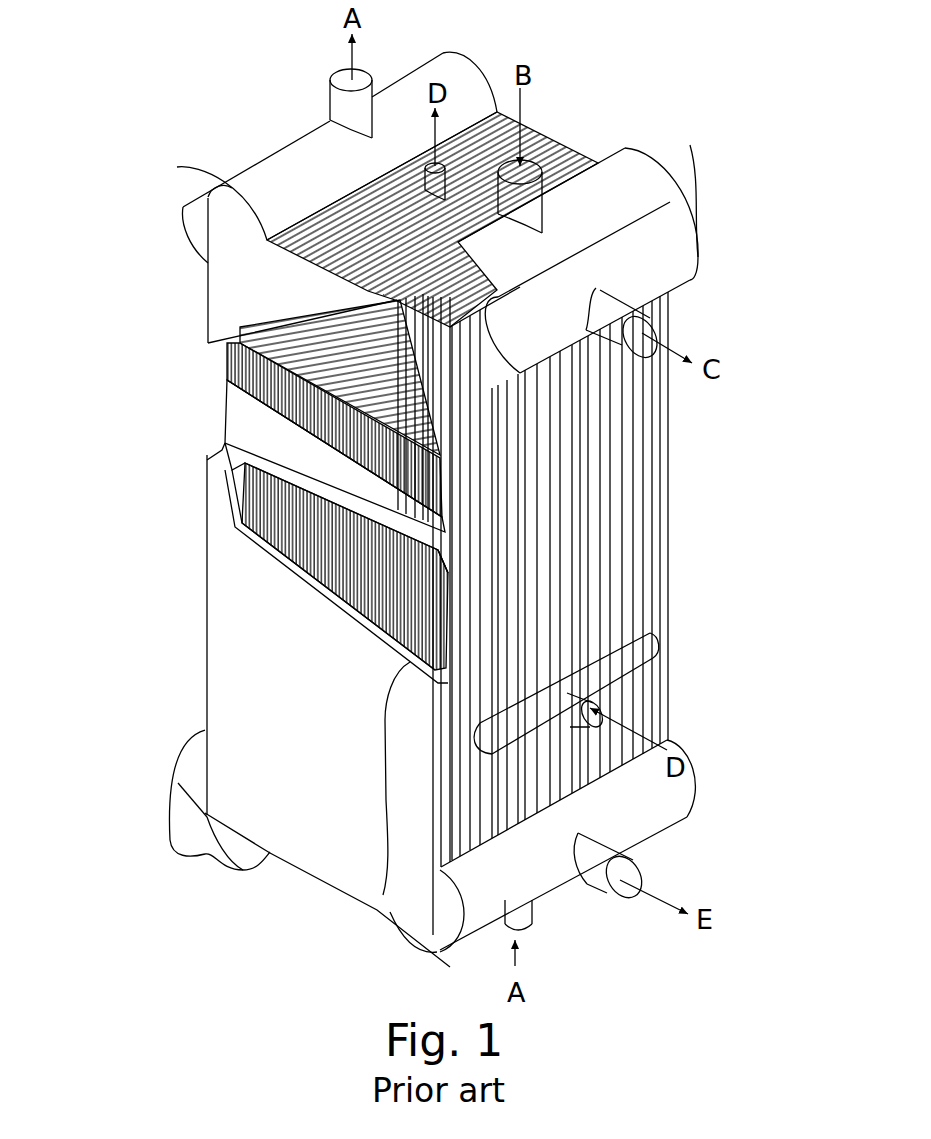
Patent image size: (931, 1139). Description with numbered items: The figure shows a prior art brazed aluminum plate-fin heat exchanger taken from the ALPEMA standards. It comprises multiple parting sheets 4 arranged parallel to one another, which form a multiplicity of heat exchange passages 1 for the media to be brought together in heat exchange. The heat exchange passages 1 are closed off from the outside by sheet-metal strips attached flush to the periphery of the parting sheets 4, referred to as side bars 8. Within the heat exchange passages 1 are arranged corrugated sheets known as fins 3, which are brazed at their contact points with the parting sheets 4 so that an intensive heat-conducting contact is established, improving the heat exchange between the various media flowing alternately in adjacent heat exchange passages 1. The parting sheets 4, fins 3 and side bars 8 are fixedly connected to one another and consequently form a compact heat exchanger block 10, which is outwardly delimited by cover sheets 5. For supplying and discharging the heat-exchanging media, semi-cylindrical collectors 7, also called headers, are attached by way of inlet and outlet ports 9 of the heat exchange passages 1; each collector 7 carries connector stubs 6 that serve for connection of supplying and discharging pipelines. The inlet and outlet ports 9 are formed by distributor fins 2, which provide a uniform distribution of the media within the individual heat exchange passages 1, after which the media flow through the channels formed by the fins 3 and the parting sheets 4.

The heat exchange passage 1 is at (362, 514).
The distributor fin 2 is at (228, 360).
The fin 3 is at (247, 393).
The parting sheet 4 is at (253, 437).
The cover sheet 5 is at (220, 627).
The connector stub 6 is at (328, 97).
The collector 7 is at (183, 207).
The side bar 8 is at (383, 895).
The inlet and outlet port 9 is at (378, 297).
The heat exchanger block 10 is at (700, 497).